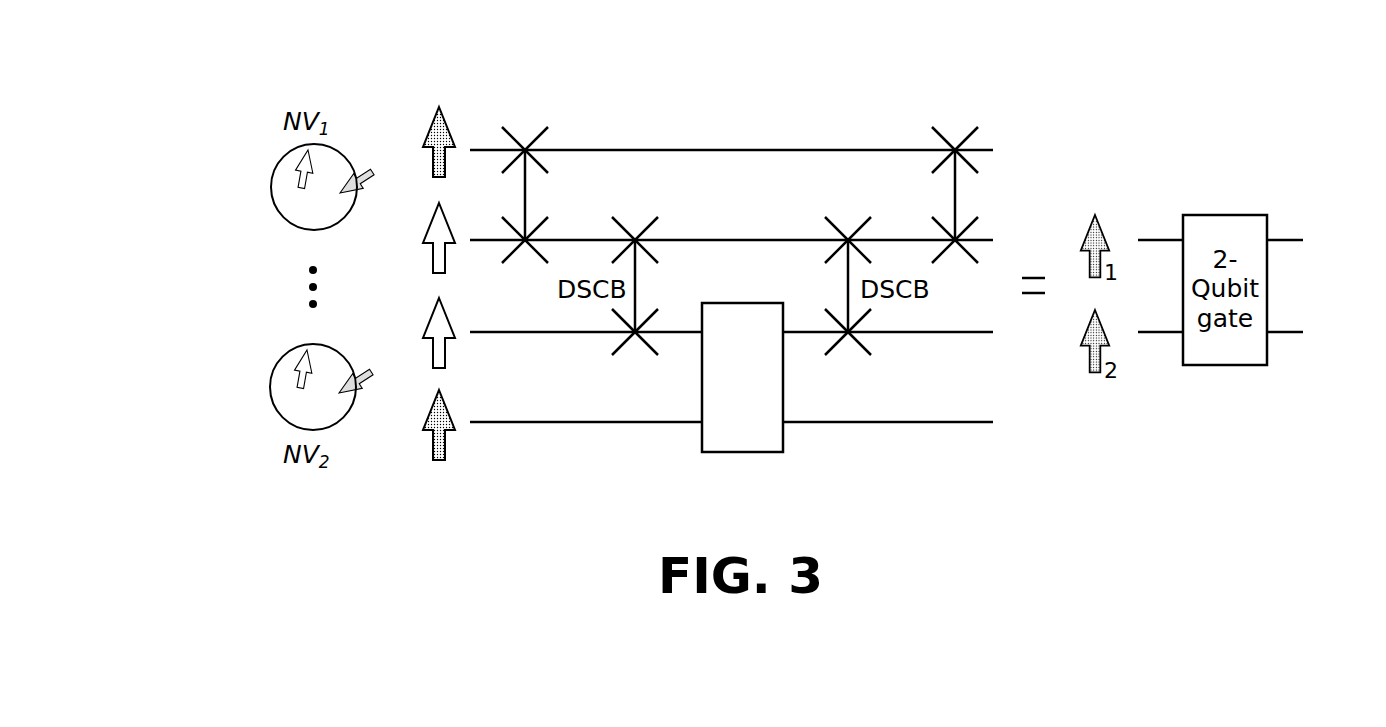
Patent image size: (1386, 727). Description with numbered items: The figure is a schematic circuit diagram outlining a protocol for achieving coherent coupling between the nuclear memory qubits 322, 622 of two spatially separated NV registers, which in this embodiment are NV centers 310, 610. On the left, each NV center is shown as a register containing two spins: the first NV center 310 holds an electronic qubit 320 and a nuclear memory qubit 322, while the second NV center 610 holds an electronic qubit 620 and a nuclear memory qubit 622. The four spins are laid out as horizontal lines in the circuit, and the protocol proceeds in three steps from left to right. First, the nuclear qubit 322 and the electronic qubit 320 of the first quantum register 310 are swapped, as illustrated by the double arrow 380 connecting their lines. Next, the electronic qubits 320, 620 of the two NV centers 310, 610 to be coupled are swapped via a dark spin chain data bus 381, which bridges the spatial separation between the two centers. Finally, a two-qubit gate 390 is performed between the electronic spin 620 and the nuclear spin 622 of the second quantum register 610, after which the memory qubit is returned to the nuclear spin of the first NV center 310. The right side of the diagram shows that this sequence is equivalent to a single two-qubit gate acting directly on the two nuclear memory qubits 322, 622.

The first NV center 310 is at (272, 187).
The electronic qubit of the first quantum register 320 is at (305, 166).
The nuclear memory qubit of the first quantum register 322 is at (300, 215).
The second NV center 610 is at (271, 387).
The electronic qubit of the second quantum register 620 is at (305, 366).
The nuclear memory qubit of the second quantum register 622 is at (300, 415).
The double arrow (swap of nuclear and electronic qubits) 380 is at (529, 190).
The dark spin chain data bus 381 is at (639, 280).
The two-qubit gate 390 is at (784, 447).